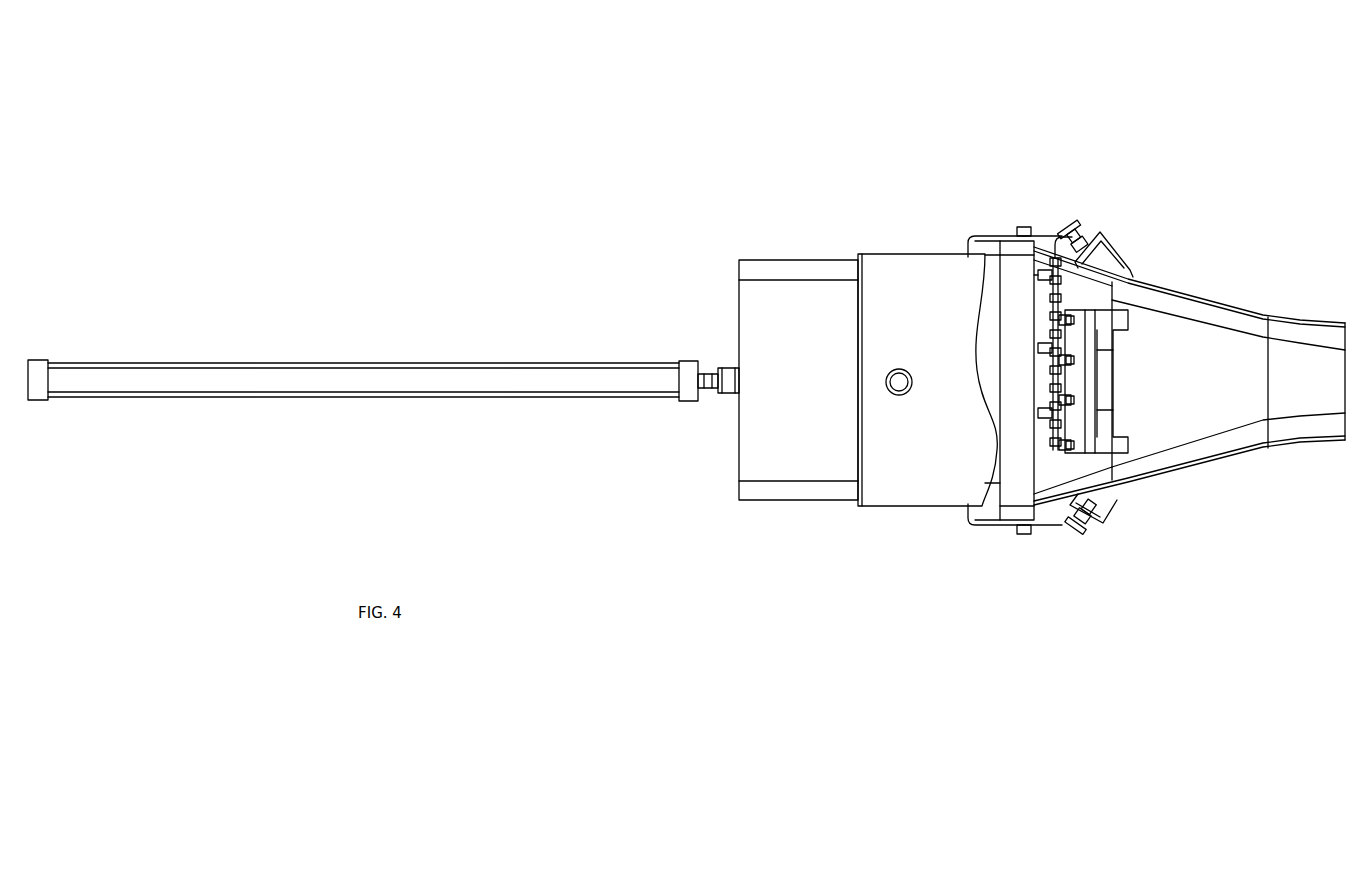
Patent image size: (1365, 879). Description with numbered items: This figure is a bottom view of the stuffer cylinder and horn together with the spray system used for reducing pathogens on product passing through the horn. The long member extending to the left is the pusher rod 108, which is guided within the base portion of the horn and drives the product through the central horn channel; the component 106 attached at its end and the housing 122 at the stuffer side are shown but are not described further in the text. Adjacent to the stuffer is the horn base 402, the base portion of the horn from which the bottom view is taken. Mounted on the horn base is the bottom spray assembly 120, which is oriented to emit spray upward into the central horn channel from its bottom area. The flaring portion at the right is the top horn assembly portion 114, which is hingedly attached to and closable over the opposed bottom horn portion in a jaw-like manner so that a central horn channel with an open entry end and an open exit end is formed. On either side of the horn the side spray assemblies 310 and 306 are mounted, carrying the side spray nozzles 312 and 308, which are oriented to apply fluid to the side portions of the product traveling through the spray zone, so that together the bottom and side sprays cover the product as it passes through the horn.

The rod 106 is at (363, 344).
The pusher rod 108 is at (634, 337).
The horn base 402 is at (709, 336).
The housing 122 is at (855, 313).
The bottom spray assembly 120 is at (1136, 451).
The top horn assembly portion 114 is at (1189, 495).
The side spray assembly 310 is at (1195, 210).
The side spray nozzle 312 is at (1057, 143).
The side spray nozzle 308 is at (1010, 564).
The side spray assembly 306 is at (1006, 595).